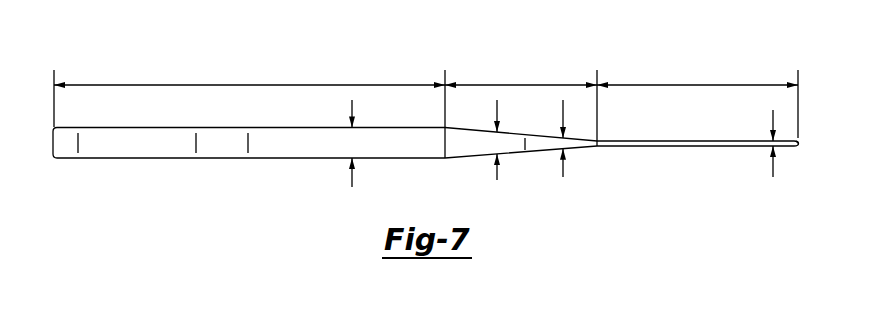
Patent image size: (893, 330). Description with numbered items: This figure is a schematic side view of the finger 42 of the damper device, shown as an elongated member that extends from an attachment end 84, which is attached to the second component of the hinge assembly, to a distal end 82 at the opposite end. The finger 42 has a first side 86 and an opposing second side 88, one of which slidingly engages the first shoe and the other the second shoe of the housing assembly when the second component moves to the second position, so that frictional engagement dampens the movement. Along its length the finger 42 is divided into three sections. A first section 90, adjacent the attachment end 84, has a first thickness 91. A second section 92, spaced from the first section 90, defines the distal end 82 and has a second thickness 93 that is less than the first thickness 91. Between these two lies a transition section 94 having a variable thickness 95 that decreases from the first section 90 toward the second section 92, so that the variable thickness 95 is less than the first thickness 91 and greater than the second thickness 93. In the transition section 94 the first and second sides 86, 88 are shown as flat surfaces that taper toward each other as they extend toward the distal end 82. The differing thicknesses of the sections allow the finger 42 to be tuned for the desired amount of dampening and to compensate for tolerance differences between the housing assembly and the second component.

The finger 42 is at (108, 50).
The first section 90 is at (215, 83).
The transition section 94 is at (520, 83).
The second section 92 is at (692, 83).
The attachment end 84 is at (60, 147).
The second side 88 is at (255, 128).
The first side 86 is at (248, 160).
The first thickness 91 is at (352, 180).
The variable thickness 95 is at (497, 177).
The second thickness 93 is at (773, 170).
The distal end 82 is at (796, 148).